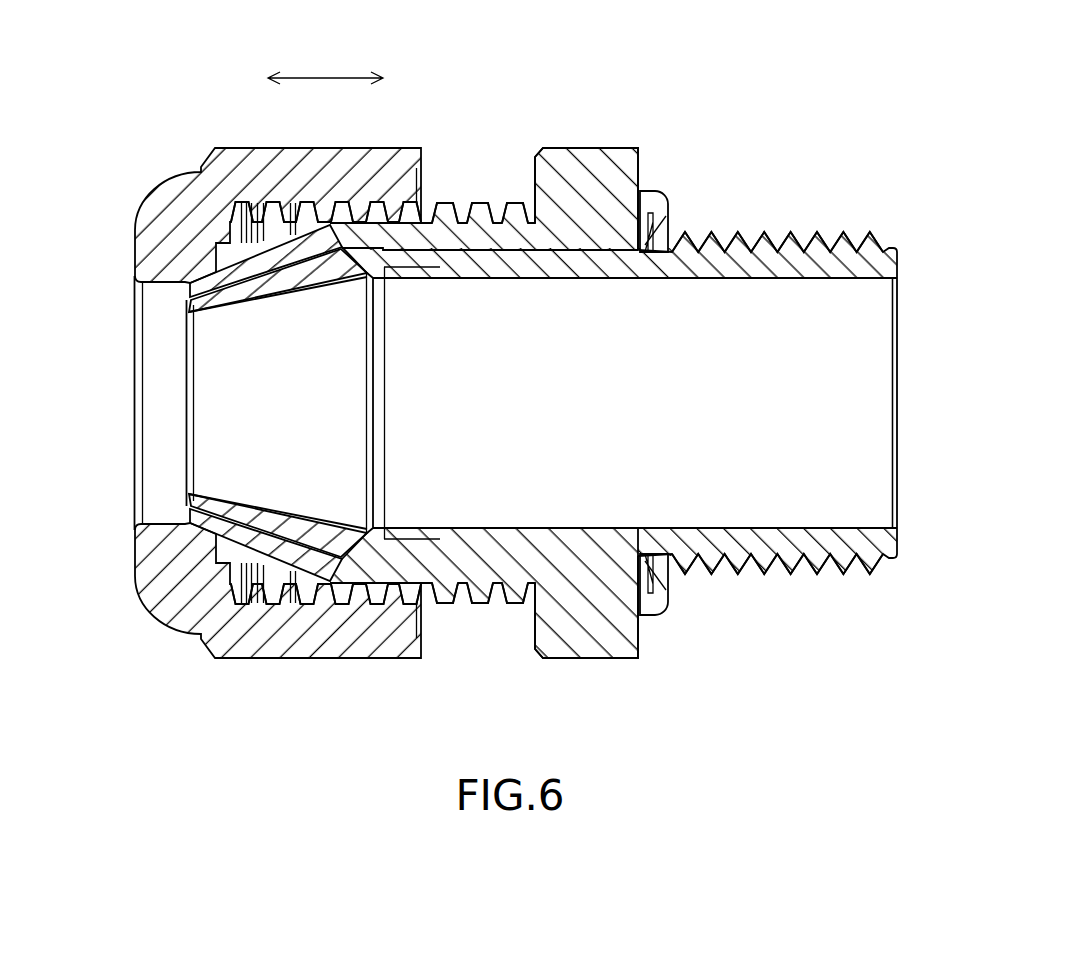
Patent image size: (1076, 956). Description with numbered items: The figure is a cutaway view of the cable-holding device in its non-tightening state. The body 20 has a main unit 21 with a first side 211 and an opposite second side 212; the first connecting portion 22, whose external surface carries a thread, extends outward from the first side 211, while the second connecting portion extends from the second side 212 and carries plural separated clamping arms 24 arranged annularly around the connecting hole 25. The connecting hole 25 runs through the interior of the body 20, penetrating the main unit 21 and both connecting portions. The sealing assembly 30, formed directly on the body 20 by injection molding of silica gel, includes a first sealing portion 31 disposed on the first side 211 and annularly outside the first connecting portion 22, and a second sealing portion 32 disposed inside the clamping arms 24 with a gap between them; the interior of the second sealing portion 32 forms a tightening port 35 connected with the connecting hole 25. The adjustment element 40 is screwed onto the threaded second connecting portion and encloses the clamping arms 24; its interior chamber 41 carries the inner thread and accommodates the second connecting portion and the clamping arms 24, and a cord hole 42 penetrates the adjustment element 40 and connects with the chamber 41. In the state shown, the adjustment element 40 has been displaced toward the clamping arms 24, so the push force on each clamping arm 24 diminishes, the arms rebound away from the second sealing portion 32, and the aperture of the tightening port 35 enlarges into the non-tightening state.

The body 20 is at (822, 215).
The main unit 21 is at (590, 165).
The first side 211 is at (640, 168).
The second side 212 is at (535, 178).
The first connecting portion 22 is at (822, 547).
The clamping arms 24 is at (272, 547).
The connecting hole 25 is at (853, 377).
The sealing assembly 30 is at (205, 277).
The first sealing portion 31 is at (662, 203).
The second sealing portion 32 is at (203, 505).
The tightening port 35 is at (218, 395).
The adjustment element 40 is at (186, 156).
The chamber 41 is at (243, 240).
The cord hole 42 is at (156, 330).